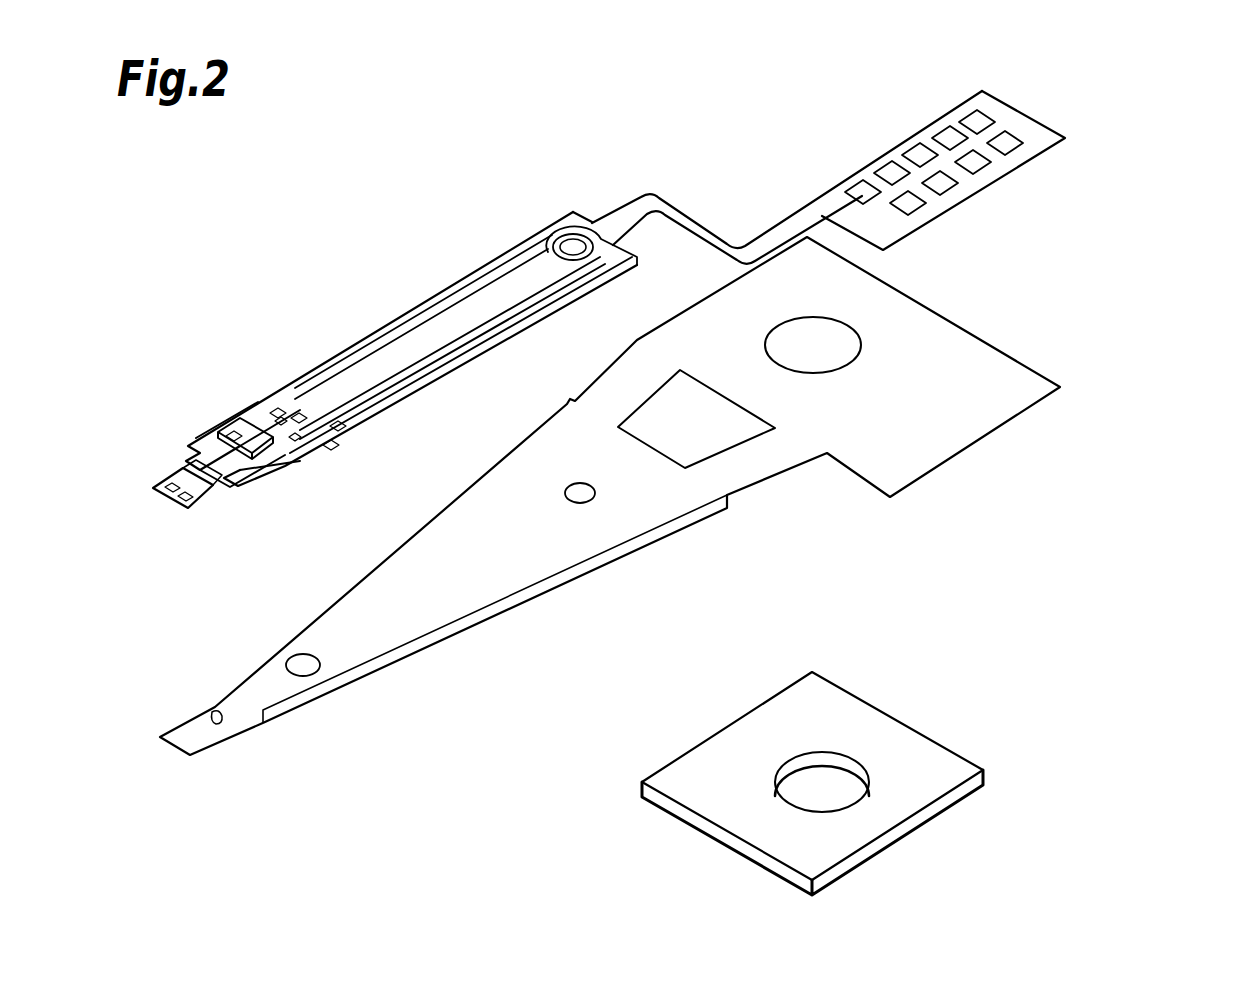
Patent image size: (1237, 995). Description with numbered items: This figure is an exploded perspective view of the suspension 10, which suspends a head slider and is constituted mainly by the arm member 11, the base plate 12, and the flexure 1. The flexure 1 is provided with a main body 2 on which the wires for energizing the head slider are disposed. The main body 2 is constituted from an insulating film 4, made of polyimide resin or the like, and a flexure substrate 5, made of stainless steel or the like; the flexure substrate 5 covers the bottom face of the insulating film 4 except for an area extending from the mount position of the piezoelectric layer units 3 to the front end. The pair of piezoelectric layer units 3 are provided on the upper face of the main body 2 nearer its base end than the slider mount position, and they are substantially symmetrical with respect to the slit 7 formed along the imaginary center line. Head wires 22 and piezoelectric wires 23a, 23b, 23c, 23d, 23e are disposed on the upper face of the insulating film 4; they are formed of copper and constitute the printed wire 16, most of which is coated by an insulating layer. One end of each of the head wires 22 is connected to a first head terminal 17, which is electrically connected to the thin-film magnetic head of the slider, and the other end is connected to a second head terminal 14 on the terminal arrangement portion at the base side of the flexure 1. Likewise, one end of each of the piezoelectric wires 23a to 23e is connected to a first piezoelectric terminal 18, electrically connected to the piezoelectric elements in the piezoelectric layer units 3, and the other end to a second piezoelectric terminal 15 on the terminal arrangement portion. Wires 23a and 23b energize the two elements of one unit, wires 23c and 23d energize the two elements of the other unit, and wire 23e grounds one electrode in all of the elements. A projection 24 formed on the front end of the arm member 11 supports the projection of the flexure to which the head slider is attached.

The flexure 1 is at (567, 201).
The main body 2 is at (384, 320).
The piezoelectric layer unit 3 is at (263, 450).
The insulating film 4 is at (490, 339).
The flexure substrate 5 is at (470, 362).
The slit 7 is at (223, 493).
The suspension 10 is at (1150, 158).
The arm member 11 is at (565, 543).
The base plate 12 is at (750, 732).
The second head terminals 14 is at (1005, 146).
The second piezoelectric terminals 15 is at (977, 121).
The printed wire 16 is at (468, 287).
The first head terminals 17 is at (200, 503).
The first piezoelectric terminals 18 is at (277, 424).
The head wires 22 is at (183, 468).
The piezoelectric wire 23a is at (232, 437).
The piezoelectric wire 23b is at (277, 413).
The piezoelectric wire 23c is at (337, 427).
The piezoelectric wire 23d is at (330, 446).
The piezoelectric wire 23e is at (297, 417).
The projection 24 is at (222, 725).